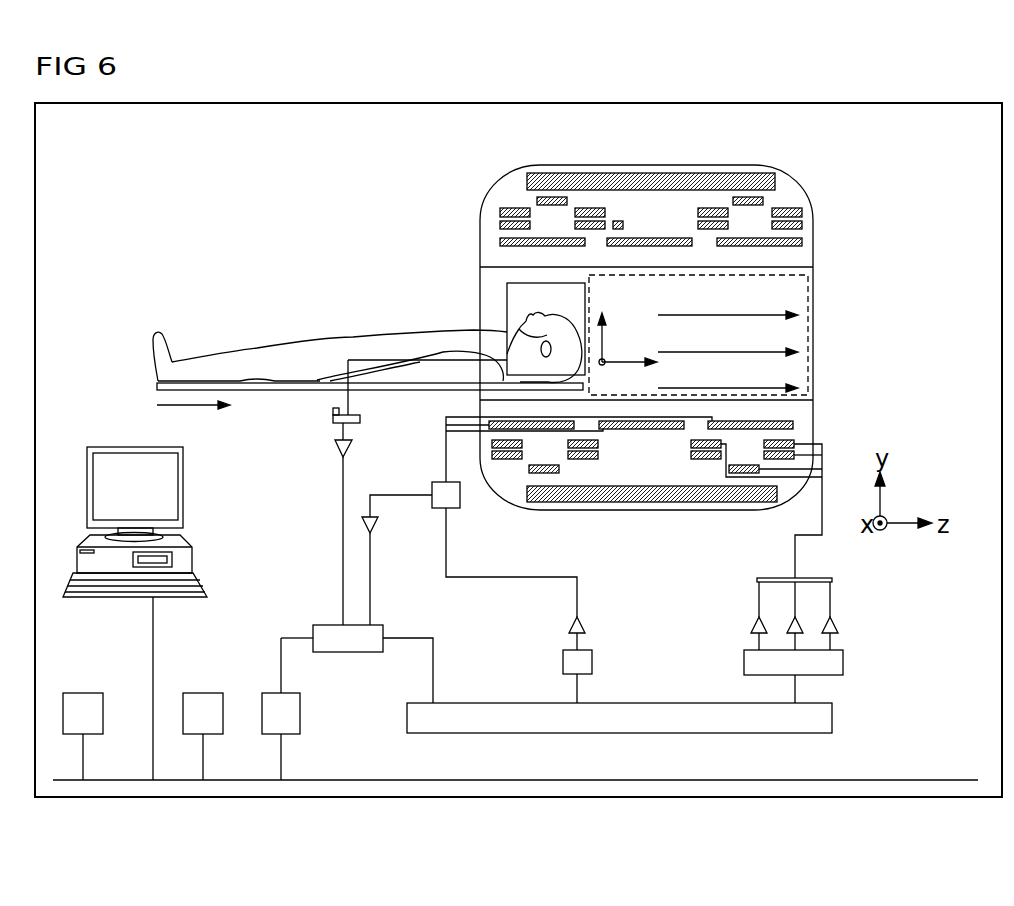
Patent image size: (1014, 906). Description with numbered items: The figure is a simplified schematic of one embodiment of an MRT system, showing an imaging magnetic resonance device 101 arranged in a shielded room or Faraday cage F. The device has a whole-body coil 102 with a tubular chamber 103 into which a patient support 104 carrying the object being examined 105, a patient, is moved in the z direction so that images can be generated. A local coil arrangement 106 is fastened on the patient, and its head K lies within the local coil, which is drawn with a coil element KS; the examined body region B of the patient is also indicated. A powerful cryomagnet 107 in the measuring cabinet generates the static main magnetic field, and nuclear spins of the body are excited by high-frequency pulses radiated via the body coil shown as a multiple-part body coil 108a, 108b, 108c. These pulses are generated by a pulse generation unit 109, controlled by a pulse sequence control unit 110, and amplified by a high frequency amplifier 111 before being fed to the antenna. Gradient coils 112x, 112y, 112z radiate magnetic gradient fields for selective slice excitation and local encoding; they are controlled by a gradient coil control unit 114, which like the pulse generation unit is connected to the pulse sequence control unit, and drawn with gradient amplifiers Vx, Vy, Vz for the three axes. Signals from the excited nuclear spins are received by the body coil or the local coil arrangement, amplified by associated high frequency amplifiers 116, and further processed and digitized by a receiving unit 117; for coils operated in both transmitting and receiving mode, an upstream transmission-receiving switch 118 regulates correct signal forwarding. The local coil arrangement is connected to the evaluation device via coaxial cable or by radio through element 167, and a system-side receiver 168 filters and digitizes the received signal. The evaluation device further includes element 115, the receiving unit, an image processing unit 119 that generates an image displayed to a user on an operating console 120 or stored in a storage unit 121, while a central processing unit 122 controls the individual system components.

The magnetic resonance device 101 is at (915, 188).
The whole-body coil 102 is at (693, 165).
The chamber 103 is at (835, 331).
The patient support 104 is at (255, 390).
The object being examined 105 is at (207, 358).
The local coil arrangement 106 is at (507, 330).
The cryomagnet 107 is at (555, 173).
The body coil part 108a is at (500, 240).
The body coil part 108b is at (642, 238).
The body coil part 108c is at (803, 246).
The pulse generation unit 109 is at (592, 662).
The pulse sequence control unit 110 is at (832, 715).
The high frequency amplifier 111 is at (585, 625).
The gradient coil 112x is at (803, 235).
The gradient coil 112y is at (803, 212).
The gradient coil 112z is at (763, 200).
The gradient coil control unit 114 is at (843, 664).
The evaluation device element 115 is at (337, 450).
The high frequency amplifier 116 is at (377, 528).
The receiving unit 117 is at (349, 653).
The transmission-receiving switch 118 is at (432, 485).
The image processing unit 119 is at (270, 693).
The operating console 120 is at (192, 557).
The storage unit 121 is at (83, 693).
The central processing unit 122 is at (203, 693).
The radio connection element 167 is at (333, 410).
The receiver 168 is at (360, 418).
The examination region of patient B is at (277, 358).
The Faraday cage F is at (440, 103).
The head K is at (520, 327).
The coil element KS is at (618, 221).
The x gradient amplifier Vx is at (752, 625).
The y gradient amplifier Vy is at (788, 623).
The z gradient amplifier Vz is at (838, 625).